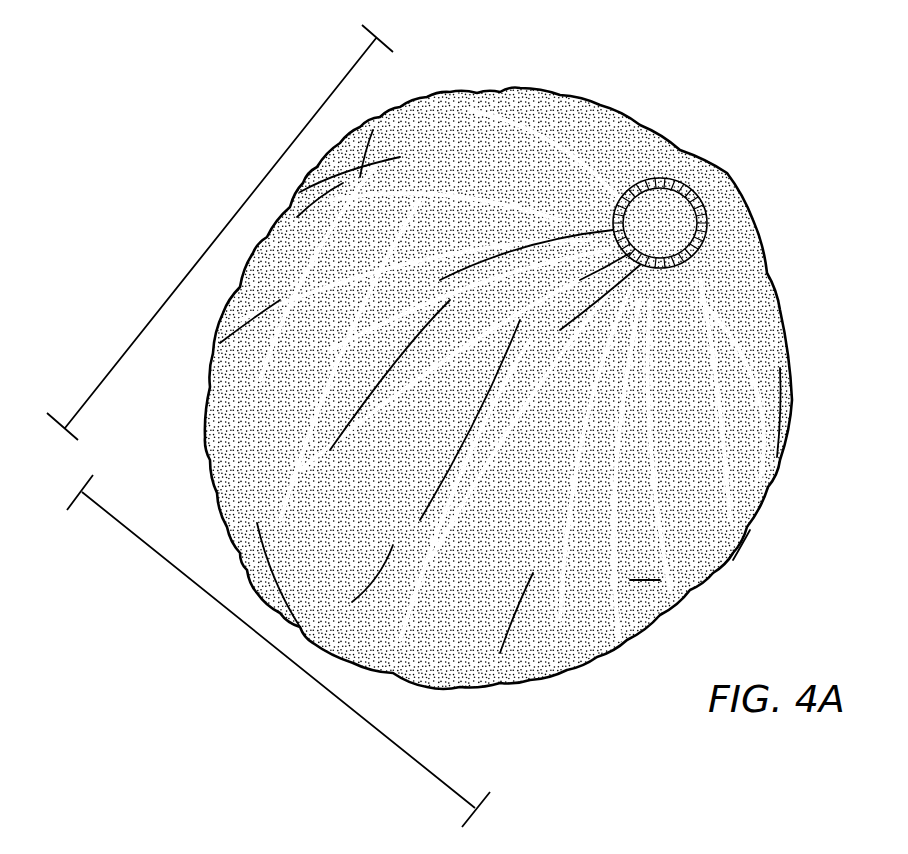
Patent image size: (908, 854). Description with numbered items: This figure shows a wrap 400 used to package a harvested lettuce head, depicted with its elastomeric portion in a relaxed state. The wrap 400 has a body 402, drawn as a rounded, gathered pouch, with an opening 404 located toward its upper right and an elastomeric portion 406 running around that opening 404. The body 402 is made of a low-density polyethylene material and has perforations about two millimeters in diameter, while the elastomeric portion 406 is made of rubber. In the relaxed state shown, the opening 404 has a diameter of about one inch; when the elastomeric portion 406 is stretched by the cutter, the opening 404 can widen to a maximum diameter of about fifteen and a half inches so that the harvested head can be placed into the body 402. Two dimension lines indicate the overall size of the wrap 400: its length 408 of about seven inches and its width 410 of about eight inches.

The wrap 400 is at (548, 361).
The body 402 is at (797, 400).
The opening 404 is at (823, 33).
The elastomeric portion 406 is at (680, 262).
The length 408 is at (220, 232).
The width 410 is at (278, 651).